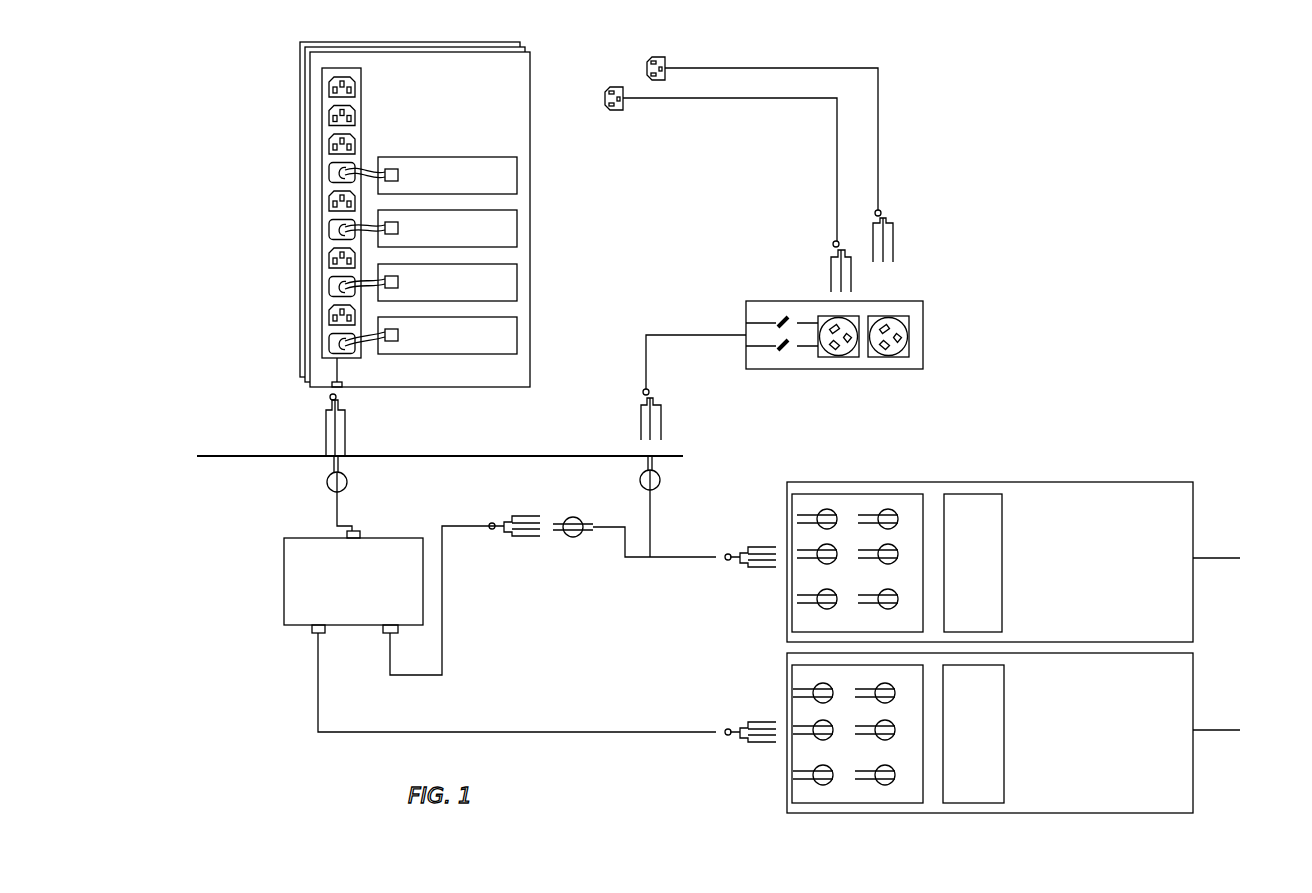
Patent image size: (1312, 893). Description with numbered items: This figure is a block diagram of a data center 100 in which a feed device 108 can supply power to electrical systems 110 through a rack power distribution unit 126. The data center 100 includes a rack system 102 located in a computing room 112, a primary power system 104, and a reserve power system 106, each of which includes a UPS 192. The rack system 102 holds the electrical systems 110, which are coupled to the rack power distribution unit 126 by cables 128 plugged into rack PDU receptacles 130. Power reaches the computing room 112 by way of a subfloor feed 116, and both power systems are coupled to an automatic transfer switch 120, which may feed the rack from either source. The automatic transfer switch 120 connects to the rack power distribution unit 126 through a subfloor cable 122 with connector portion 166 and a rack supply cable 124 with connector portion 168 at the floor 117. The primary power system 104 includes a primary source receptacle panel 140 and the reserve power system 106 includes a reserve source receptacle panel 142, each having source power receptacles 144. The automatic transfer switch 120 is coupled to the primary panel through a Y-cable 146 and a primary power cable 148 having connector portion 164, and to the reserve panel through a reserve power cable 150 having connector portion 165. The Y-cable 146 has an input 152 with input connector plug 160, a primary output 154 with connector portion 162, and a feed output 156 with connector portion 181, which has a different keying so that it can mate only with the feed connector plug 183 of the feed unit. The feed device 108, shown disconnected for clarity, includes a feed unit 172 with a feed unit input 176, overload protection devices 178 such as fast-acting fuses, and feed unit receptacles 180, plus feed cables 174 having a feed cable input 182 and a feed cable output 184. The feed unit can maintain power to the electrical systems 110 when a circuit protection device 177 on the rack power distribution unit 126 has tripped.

The data center 100 is at (1222, 128).
The rack system 102 is at (454, 104).
The primary power system 104 is at (1012, 562).
The reserve power system 106 is at (1012, 733).
The feed device 108 is at (822, 248).
The electrical systems 110 is at (537, 360).
The computing room 112 is at (760, 248).
The subfloor feed 116 is at (474, 613).
The floor 117 is at (484, 456).
The automatic transfer switch 120 is at (342, 620).
The subfloor cable 122 is at (333, 526).
The rack supply cable 124 is at (343, 388).
The rack power distribution unit 126 is at (290, 238).
The cables 128 is at (368, 164).
The rack PDU receptacles 130 is at (330, 146).
The primary source receptacle panel 140 is at (792, 611).
The reserve source receptacle panel 142 is at (800, 782).
The source power receptacles 144 is at (808, 513).
The Y-cable 146 is at (632, 531).
The primary power cable 148 is at (418, 676).
The reserve power cable 150 is at (577, 733).
The input 152 is at (735, 578).
The primary output 154 is at (566, 543).
The feed output 156 is at (628, 472).
The input connector plug 160 is at (758, 566).
The connector portion 162 is at (570, 517).
The connector portion 164 is at (512, 516).
The reserve connector 165 is at (760, 740).
The connector portion 166 is at (348, 482).
The connector portion 168 is at (326, 430).
The feed unit 172 is at (834, 339).
The feed cables 174 is at (731, 149).
The feed unit input 176 is at (694, 335).
The circuit protection device 177 is at (336, 375).
The overload protection devices 178 is at (782, 314).
The feed unit receptacles 180 is at (869, 356).
The connector portion 181 is at (661, 480).
The feed cable input 182 is at (892, 210).
The feed connector plug 183 is at (662, 419).
The feed cable output 184 is at (610, 117).
The UPS 192 is at (960, 580).